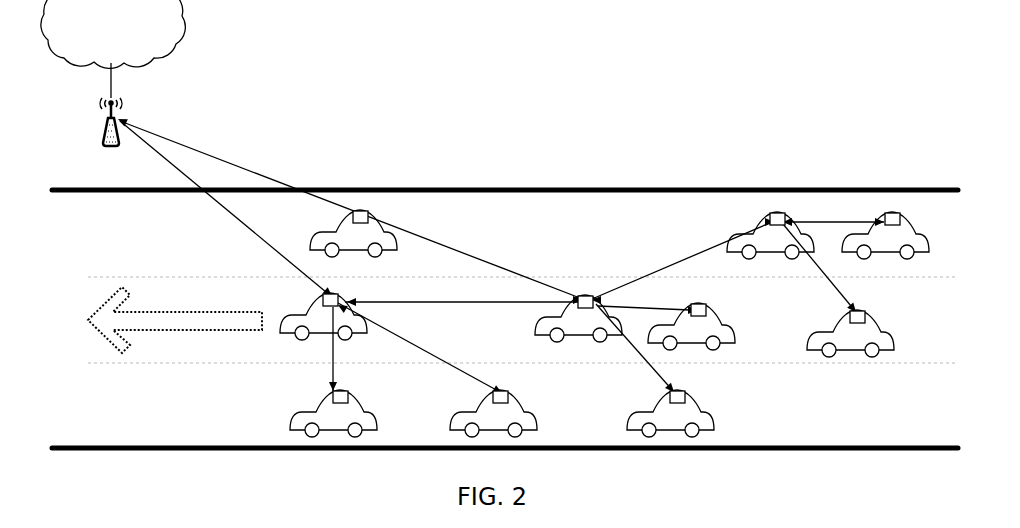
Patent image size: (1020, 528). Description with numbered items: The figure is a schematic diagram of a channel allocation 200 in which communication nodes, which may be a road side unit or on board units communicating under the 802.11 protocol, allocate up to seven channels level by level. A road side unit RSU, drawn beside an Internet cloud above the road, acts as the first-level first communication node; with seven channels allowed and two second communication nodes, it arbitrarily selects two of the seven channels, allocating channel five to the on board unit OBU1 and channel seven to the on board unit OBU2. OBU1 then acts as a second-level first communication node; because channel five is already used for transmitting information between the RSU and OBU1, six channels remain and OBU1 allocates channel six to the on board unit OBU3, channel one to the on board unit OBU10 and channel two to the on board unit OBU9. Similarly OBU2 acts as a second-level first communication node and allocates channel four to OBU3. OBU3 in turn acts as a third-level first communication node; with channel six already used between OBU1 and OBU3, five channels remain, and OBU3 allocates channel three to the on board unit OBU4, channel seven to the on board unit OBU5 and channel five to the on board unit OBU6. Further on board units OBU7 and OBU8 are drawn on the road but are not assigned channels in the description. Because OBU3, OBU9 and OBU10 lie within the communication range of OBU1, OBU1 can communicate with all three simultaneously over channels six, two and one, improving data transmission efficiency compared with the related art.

The channel allocation 200 is at (499, 224).
The road side unit RSU is at (110, 138).
The on board unit 1 OBU1 is at (323, 316).
The on board unit 2 OBU2 is at (353, 233).
The on board unit 3 OBU3 is at (578, 318).
The on board unit 4 OBU4 is at (770, 235).
The on board unit 5 OBU5 is at (691, 326).
The on board unit 6 OBU6 is at (670, 413).
The on-board unit 7 OBU7 is at (850, 333).
The on-board unit 8 OBU8 is at (885, 235).
The on board unit 9 OBU9 is at (333, 413).
The on board unit 10 OBU10 is at (493, 413).